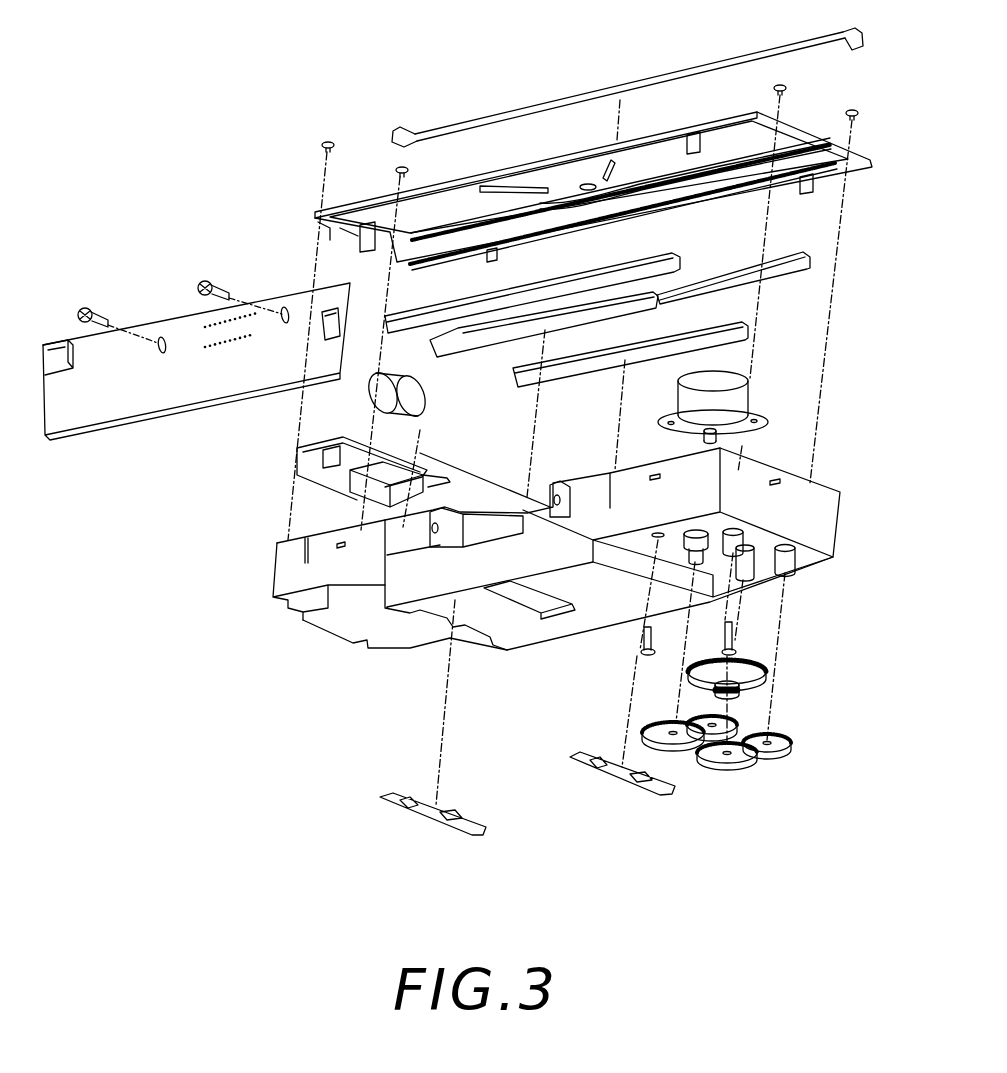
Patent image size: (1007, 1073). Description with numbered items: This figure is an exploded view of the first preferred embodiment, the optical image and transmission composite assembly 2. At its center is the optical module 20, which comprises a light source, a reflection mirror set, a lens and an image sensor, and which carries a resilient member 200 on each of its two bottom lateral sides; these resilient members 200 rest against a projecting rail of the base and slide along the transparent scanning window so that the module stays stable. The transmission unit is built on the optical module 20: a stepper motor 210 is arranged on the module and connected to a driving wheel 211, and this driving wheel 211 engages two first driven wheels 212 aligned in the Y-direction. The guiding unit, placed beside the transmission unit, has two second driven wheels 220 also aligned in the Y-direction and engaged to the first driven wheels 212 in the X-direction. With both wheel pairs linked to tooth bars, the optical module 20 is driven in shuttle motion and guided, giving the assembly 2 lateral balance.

The optical image and transmission composite assembly 2 is at (233, 790).
The optical module 20 is at (360, 637).
The resilient member 200 is at (425, 821).
The stepper motor 210 is at (743, 399).
The driving wheel 211 is at (762, 672).
The first driven wheel 212 is at (727, 758).
The second driven wheel 220 is at (790, 741).